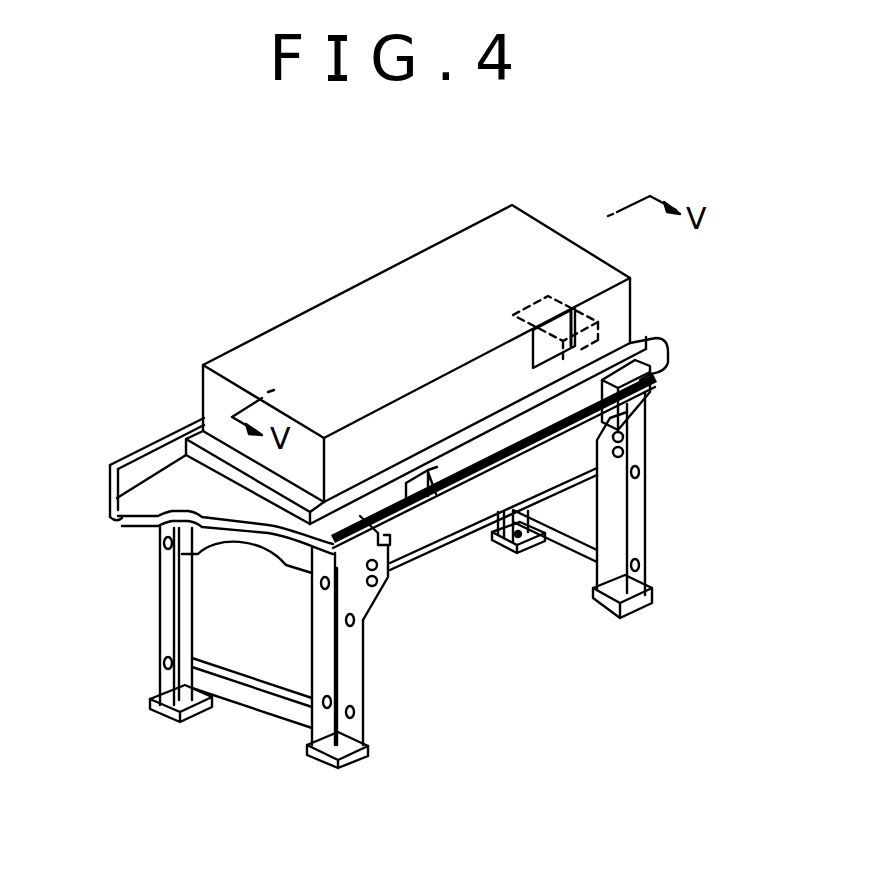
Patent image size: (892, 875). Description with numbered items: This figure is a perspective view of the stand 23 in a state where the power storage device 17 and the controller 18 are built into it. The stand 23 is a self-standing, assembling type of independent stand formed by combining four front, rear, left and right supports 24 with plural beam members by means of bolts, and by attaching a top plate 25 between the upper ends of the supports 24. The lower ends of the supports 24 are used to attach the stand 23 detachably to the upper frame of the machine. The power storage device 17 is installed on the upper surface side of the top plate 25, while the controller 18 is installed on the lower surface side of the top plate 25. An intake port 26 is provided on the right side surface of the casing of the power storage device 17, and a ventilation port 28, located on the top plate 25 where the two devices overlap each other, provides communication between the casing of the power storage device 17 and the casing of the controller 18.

The power storage device 17 is at (282, 320).
The controller 18 is at (450, 485).
The stand 23 is at (160, 589).
The supports 24 is at (160, 660).
The top plate 25 is at (642, 324).
The intake port 26 is at (582, 344).
The ventilation port 28 is at (602, 322).